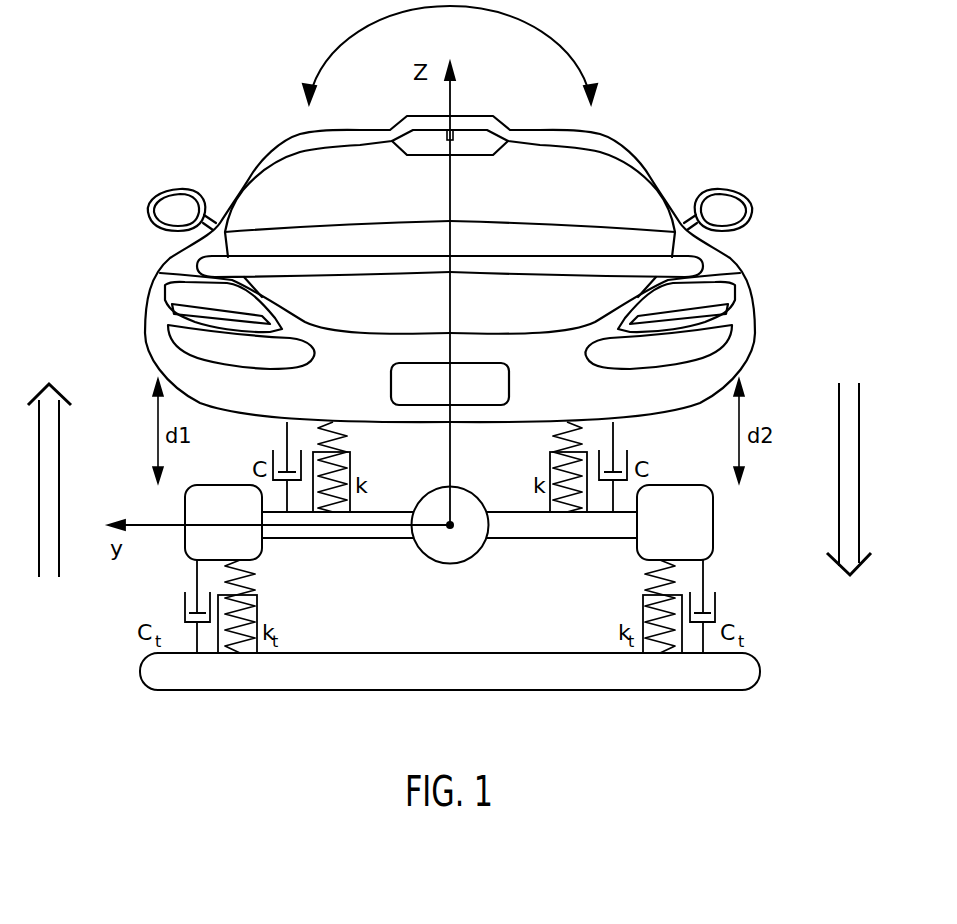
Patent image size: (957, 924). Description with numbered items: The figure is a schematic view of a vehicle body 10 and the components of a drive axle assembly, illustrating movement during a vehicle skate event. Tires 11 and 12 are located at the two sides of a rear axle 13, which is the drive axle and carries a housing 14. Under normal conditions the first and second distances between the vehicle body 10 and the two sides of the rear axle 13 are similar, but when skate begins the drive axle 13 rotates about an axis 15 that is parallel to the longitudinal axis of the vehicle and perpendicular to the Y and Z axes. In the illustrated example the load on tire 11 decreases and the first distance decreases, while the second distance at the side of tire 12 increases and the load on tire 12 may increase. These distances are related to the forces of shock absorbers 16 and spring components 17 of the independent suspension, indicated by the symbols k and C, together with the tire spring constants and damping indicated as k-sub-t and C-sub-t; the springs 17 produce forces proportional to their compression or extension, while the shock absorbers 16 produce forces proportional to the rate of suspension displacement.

The vehicle body 10 is at (150, 287).
The tire 11 is at (187, 517).
The tire 12 is at (713, 518).
The rear axle 13 is at (370, 540).
The housing 14 is at (423, 557).
The axis 15 is at (452, 527).
The shock absorber 16 is at (350, 464).
The spring component 17 is at (343, 441).